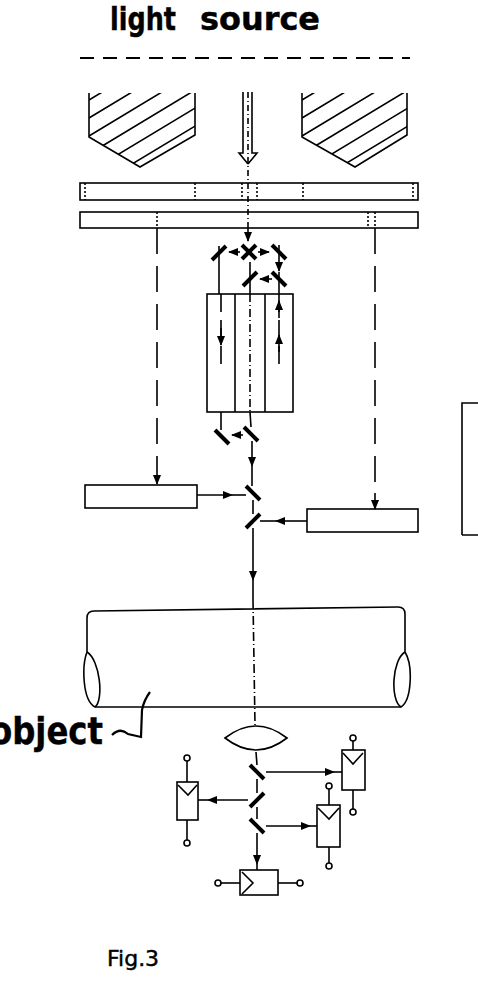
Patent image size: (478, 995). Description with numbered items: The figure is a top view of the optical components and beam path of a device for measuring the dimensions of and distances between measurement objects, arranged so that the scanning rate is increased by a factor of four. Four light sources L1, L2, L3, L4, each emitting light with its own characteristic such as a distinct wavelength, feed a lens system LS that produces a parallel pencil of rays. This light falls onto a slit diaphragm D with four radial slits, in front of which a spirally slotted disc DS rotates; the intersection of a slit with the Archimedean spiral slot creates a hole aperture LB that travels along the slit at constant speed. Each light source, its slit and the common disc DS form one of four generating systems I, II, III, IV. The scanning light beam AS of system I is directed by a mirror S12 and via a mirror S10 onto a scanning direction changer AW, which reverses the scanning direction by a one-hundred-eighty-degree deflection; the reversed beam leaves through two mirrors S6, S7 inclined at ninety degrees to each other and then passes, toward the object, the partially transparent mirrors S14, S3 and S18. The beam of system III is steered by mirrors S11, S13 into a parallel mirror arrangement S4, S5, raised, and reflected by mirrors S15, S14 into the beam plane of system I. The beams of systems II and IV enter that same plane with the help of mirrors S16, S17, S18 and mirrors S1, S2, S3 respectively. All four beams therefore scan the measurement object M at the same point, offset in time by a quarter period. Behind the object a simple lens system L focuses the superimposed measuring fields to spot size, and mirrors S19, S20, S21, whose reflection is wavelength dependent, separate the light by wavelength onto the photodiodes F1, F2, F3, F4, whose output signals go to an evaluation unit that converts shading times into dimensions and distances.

The lens system LS is at (400, 58).
The light source L1 is at (253, 108).
The light source L2 is at (243, 106).
The light source L3 is at (89, 112).
The light source L4 is at (410, 105).
The slit diaphragm D is at (418, 191).
The spirally slotted disc DS is at (418, 220).
The hole aperture LB is at (150, 216).
The generating system I is at (279, 240).
The generating system II is at (361, 240).
The generating system III is at (204, 240).
The generating system IV is at (144, 238).
The mirror S1 is at (103, 500).
The mirror S2 is at (182, 498).
The partially transparent mirror S3 is at (262, 490).
The parallel mirror arrangement S4 is at (207, 373).
The parallel mirror arrangement S5 is at (207, 405).
The mirror S6 is at (288, 282).
The mirror S7 is at (240, 279).
The mirror S10 is at (290, 248).
The mirror S11 is at (250, 250).
The mirror S12 is at (247, 250).
The mirror S13 is at (208, 254).
The partially transparent mirror S14 is at (258, 440).
The mirror S15 is at (212, 437).
The mirror S16 is at (405, 523).
The mirror S17 is at (323, 522).
The partially transparent mirror S18 is at (245, 522).
The wavelength-dependent mirror S19 is at (250, 771).
The wavelength-dependent mirror S20 is at (264, 800).
The wavelength-dependent mirror S21 is at (250, 828).
The scanning direction changer AW is at (283, 393).
The scanning light beam AS is at (251, 565).
The measurement object M is at (400, 628).
The lens system L is at (287, 731).
The photodiode F1 is at (365, 770).
The photodiode F2 is at (340, 834).
The photodiode F3 is at (265, 896).
The photodiode F4 is at (177, 802).